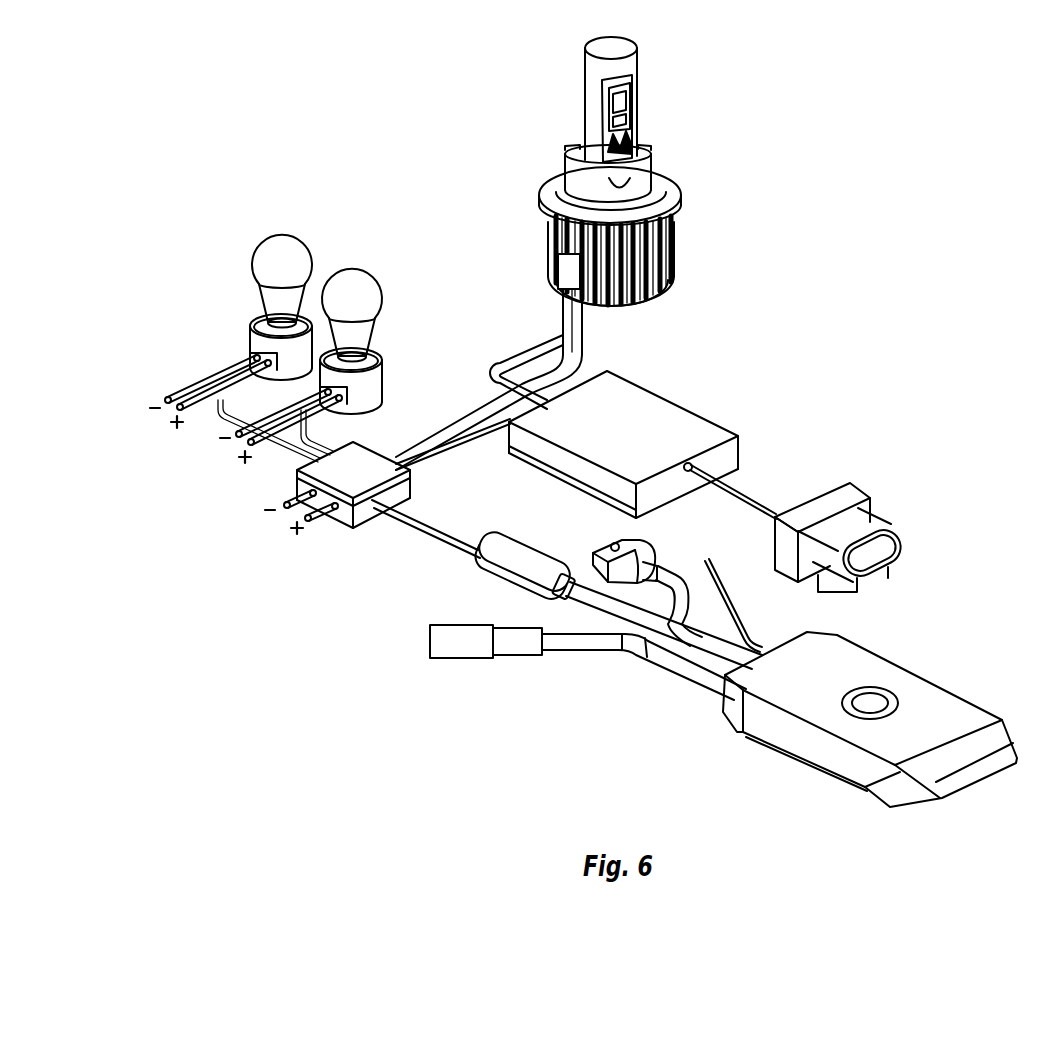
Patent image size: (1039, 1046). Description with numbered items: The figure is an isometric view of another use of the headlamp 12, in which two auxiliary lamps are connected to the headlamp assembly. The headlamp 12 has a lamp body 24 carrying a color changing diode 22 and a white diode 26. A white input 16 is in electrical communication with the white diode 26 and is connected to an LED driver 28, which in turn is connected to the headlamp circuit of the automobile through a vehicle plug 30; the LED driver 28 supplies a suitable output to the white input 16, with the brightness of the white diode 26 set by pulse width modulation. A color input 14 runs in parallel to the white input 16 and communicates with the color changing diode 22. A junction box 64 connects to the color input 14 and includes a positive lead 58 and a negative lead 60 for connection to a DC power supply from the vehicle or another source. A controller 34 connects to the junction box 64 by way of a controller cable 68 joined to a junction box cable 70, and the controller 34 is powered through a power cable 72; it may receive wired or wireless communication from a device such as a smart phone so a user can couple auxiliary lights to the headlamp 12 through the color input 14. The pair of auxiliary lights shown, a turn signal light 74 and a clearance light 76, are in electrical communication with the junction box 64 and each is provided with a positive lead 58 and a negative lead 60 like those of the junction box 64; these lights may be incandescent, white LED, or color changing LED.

The headlamp 12 is at (648, 171).
The color input 14 is at (574, 348).
The white input 16 is at (543, 343).
The color changing diode 22 is at (621, 97).
The lamp body 24 is at (590, 63).
The white diode 26 is at (632, 122).
The LED driver 28 is at (698, 428).
The vehicle plug 30 is at (838, 492).
The controller 34 is at (930, 636).
The positive lead 58 is at (190, 412).
The negative lead 60 is at (186, 398).
The junction box 64 is at (360, 457).
The controller cable 68 is at (610, 605).
The junction box cable 70 is at (440, 538).
The power cable 72 is at (445, 655).
The turn signal light 74 is at (384, 312).
The clearance light 76 is at (309, 279).